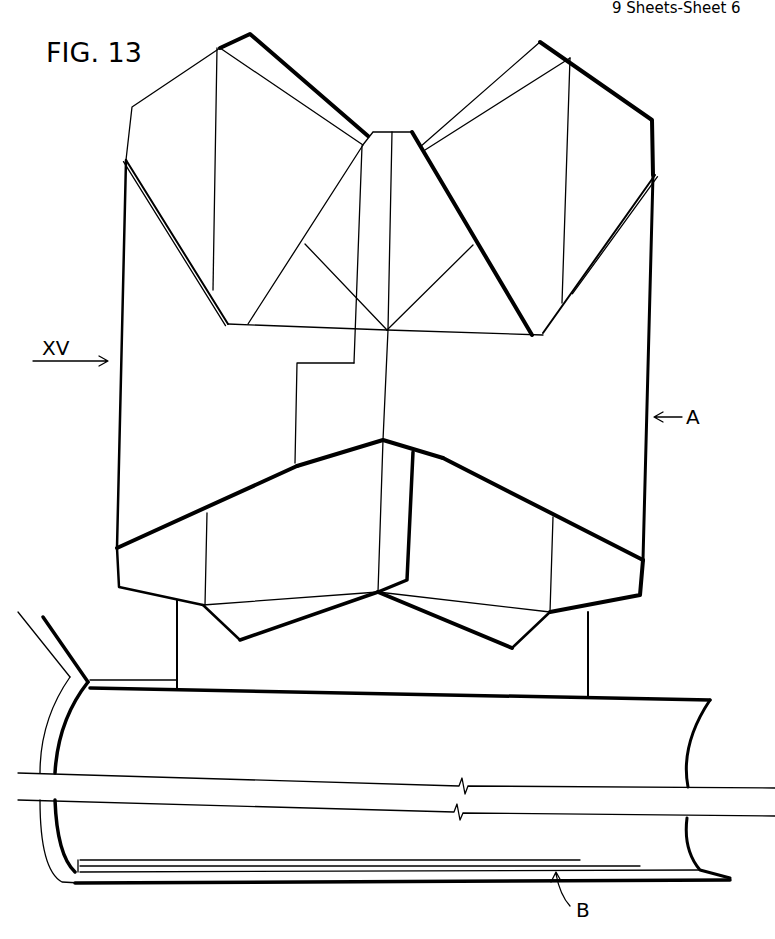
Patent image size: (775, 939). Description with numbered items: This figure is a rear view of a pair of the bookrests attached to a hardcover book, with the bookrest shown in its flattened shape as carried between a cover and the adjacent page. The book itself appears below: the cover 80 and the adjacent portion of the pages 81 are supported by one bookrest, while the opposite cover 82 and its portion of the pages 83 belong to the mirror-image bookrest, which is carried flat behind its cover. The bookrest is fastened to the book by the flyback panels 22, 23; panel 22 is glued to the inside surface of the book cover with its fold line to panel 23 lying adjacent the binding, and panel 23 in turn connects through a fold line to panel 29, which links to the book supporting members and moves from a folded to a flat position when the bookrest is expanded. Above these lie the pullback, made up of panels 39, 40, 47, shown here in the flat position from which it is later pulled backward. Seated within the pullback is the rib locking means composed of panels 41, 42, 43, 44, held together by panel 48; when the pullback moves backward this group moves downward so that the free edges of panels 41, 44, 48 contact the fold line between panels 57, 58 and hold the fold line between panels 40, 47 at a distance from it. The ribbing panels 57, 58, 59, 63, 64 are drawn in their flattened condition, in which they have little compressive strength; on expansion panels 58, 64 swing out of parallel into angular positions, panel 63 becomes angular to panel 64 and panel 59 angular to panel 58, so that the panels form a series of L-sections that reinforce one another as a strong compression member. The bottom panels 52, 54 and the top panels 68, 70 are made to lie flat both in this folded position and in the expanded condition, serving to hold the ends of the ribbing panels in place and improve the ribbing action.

The flyback panel 22 is at (60, 635).
The flyback panel 23 is at (152, 679).
The panel 29 is at (364, 668).
The pullback panel 39 is at (209, 398).
The pullback panel 40 is at (536, 408).
The rib locking panel 41 is at (321, 243).
The rib locking panel 42 is at (287, 312).
The rib locking panel 43 is at (471, 322).
The rib locking panel 44 is at (416, 248).
The pullback panel 47 is at (326, 402).
The holding panel 48 is at (383, 286).
The bottom panel 52 is at (232, 628).
The bottom panel 54 is at (496, 635).
The ribbing panel 57 is at (381, 558).
The ribbing panel 58 is at (254, 175).
The ribbing panel 59 is at (161, 175).
The ribbing panel 63 is at (596, 185).
The ribbing panel 64 is at (496, 183).
The top panel 68 is at (318, 102).
The top panel 70 is at (497, 88).
The book cover 80 is at (54, 664).
The pages 81 is at (354, 737).
The book cover 82 is at (308, 880).
The pages 83 is at (349, 848).